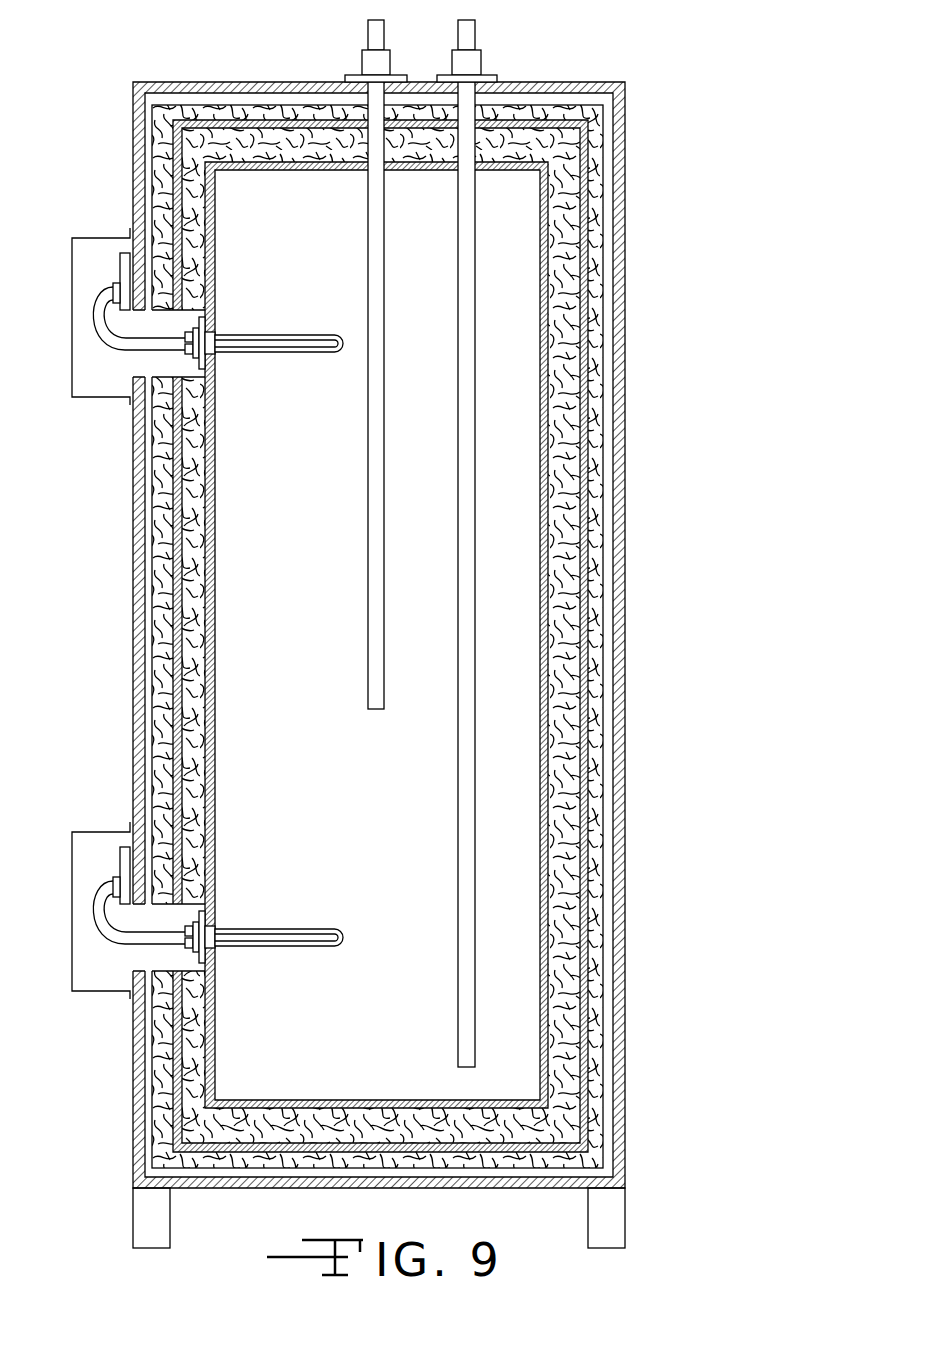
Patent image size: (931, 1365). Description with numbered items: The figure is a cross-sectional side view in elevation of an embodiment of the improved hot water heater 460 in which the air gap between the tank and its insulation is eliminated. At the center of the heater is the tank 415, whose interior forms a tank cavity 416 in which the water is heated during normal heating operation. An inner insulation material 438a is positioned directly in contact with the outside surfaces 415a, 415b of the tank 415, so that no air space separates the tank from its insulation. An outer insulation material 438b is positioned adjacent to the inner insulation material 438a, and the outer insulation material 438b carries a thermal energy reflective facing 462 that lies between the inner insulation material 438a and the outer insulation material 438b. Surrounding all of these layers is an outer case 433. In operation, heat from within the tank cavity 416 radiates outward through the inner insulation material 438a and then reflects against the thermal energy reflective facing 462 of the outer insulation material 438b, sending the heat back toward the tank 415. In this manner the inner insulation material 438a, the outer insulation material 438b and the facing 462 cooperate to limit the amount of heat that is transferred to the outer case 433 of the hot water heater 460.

The improved hot water heater 460 is at (420, 632).
The outer case 433 is at (625, 153).
The tank 415 is at (552, 638).
The outside surface of the tank 415a is at (553, 442).
The outside surface of the tank 415b is at (533, 125).
The inner insulation material 438a is at (625, 325).
The outer insulation material 438b is at (593, 762).
The thermal energy reflective facing 462 is at (420, 564).
The tank cavity 416 is at (505, 1015).